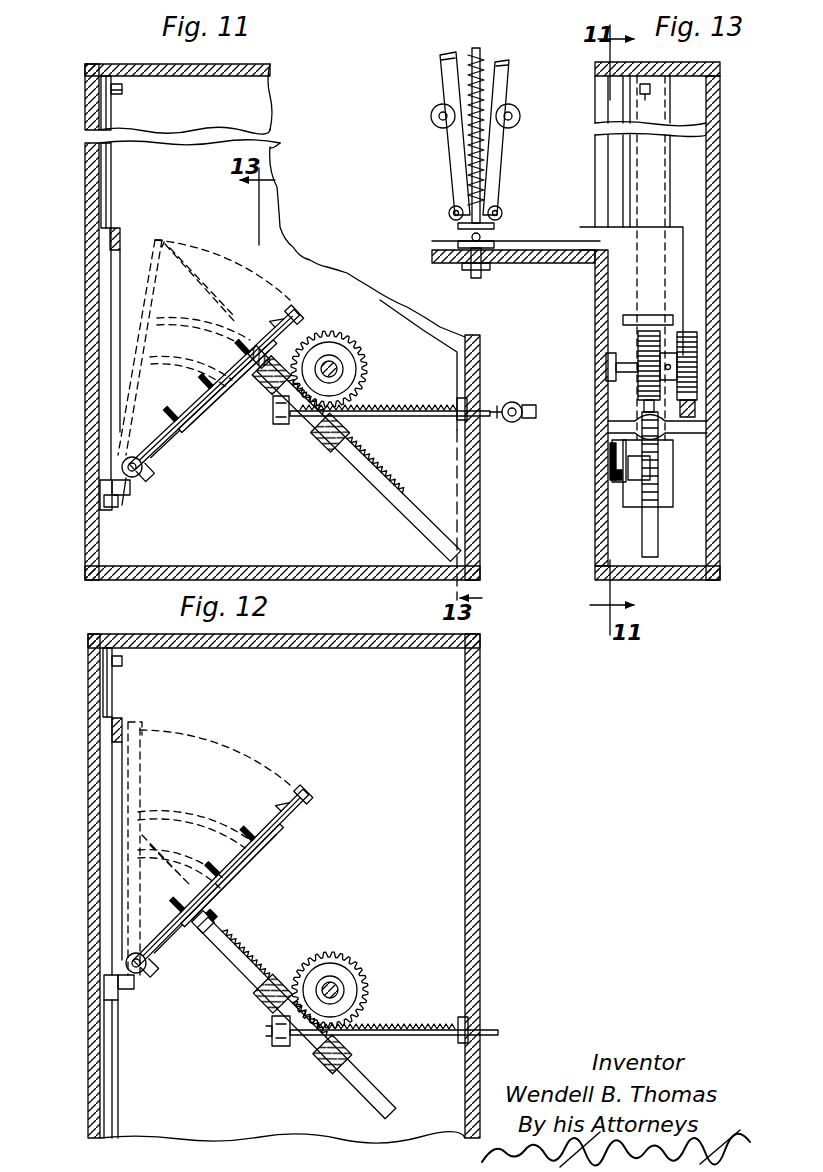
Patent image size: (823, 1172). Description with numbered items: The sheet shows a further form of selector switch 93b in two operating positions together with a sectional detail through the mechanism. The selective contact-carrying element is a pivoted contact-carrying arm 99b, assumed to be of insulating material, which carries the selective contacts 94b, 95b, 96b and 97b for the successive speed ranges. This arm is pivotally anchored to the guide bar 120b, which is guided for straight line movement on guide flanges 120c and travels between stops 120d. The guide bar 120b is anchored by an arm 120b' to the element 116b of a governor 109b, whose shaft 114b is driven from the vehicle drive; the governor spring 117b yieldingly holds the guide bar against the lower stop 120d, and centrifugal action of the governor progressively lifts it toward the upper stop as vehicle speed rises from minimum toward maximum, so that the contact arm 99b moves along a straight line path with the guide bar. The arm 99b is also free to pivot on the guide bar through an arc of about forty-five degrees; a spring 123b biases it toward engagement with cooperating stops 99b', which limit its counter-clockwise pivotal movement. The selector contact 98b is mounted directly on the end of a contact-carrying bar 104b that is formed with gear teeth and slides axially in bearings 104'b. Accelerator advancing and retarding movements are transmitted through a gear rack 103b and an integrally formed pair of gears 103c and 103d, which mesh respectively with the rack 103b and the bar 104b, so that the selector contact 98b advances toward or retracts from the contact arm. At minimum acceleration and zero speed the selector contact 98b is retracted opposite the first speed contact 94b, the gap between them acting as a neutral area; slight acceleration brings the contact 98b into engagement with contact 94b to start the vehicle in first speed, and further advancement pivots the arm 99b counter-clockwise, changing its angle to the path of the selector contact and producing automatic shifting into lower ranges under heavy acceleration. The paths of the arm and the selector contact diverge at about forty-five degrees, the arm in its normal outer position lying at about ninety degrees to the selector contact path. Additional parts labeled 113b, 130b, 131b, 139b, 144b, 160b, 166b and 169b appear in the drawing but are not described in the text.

In FIG. 11, the selector switch 93b is at (310, 222).
In FIG. 12, the selector switch 93b is at (484, 727).
In FIG. 11, the selective contact 94b is at (293, 323).
In FIG. 12, the selective contact 94b is at (284, 828).
In FIG. 11, the selective contact 95b is at (268, 416).
In FIG. 12, the selective contact 95b is at (248, 862).
In FIG. 11, the selective contact 96b is at (238, 395).
In FIG. 12, the selective contact 96b is at (226, 887).
In FIG. 11, the selective contact 97b is at (196, 425).
In FIG. 12, the selective contact 97b is at (184, 940).
In FIG. 11, the selector contact 98b is at (273, 412).
In FIG. 12, the selector contact 98b is at (212, 914).
In FIG. 11, the contact-carrying arm 99b is at (272, 291).
In FIG. 12, the contact-carrying arm 99b is at (328, 779).
In FIG. 11, the stops 99b' is at (141, 509).
In FIG. 11, the gear rack 103b is at (404, 409).
In FIG. 13, the gear rack 103b is at (695, 410).
In FIG. 12, the gear rack 103b is at (416, 1028).
In FIG. 13, the gear 103c is at (700, 326).
In FIG. 11, the gear 103d is at (352, 352).
In FIG. 13, the gear 103d is at (647, 330).
In FIG. 12, the gear 103d is at (358, 968).
In FIG. 11, the contact-carrying bar 104b is at (376, 468).
In FIG. 13, the contact-carrying bar 104b is at (652, 529).
In FIG. 12, the contact-carrying bar 104b is at (242, 962).
In FIG. 11, the bearings 104'b is at (300, 423).
In FIG. 13, the bearings 104'b is at (690, 442).
In FIG. 12, the bearings 104'b is at (278, 1040).
In FIG. 13, the governor 109b is at (516, 80).
In FIG. 13, the pivoted arm 113b is at (449, 88).
In FIG. 13, the shaft 114b is at (476, 278).
In FIG. 13, the governor element 116b is at (458, 243).
In FIG. 13, the governor spring 117b is at (486, 162).
In FIG. 11, the guide bar 120b is at (72, 354).
In FIG. 13, the guide bar 120b is at (675, 258).
In FIG. 12, the guide bar 120b is at (81, 927).
In FIG. 11, the arm 120b' is at (82, 455).
In FIG. 13, the arm 120b' is at (516, 233).
In FIG. 12, the arm 120b' is at (88, 980).
In FIG. 11, the guide flanges 120c is at (106, 206).
In FIG. 13, the guide flanges 120c is at (671, 197).
In FIG. 12, the guide flanges 120c is at (107, 695).
In FIG. 11, the stops 120d is at (122, 90).
In FIG. 13, the stops 120d is at (578, 526).
In FIG. 12, the stops 120d is at (122, 662).
In FIG. 11, the spring 123b is at (146, 478).
In FIG. 13, the spring 123b is at (610, 460).
In FIG. 12, the spring 123b is at (150, 985).
In FIG. 11, the shaft end 130b is at (521, 419).
In FIG. 11, the knob 131b is at (514, 401).
In FIG. 11, the hub 139b is at (254, 373).
In FIG. 11, the lever cap 144b is at (280, 297).
In FIG. 12, the lever cap 144b is at (278, 786).
In FIG. 11, the finger 160b is at (229, 348).
In FIG. 12, the finger 160b is at (222, 845).
In FIG. 11, the finger 166b is at (198, 397).
In FIG. 12, the finger 166b is at (197, 882).
In FIG. 11, the finger 169b is at (176, 416).
In FIG. 12, the finger 169b is at (163, 948).